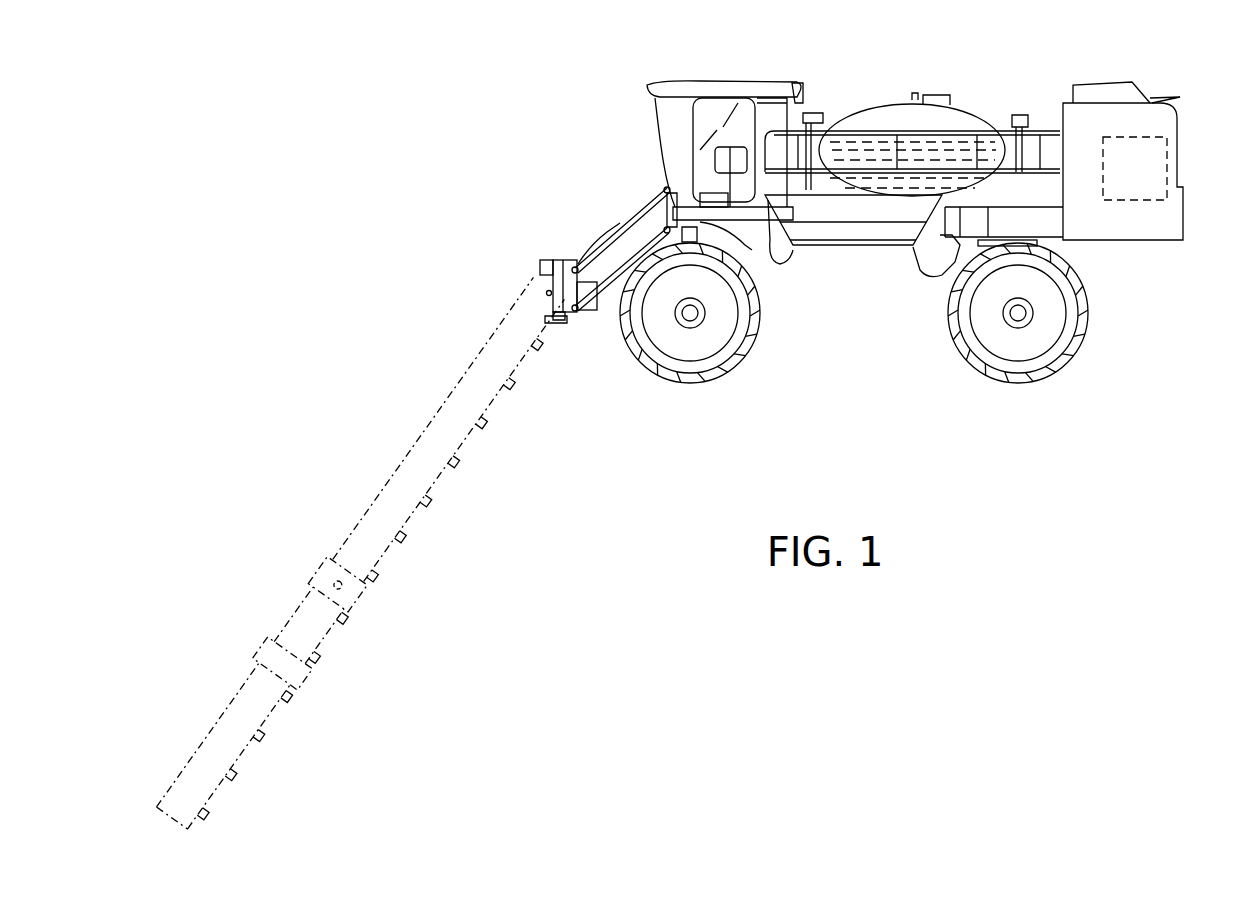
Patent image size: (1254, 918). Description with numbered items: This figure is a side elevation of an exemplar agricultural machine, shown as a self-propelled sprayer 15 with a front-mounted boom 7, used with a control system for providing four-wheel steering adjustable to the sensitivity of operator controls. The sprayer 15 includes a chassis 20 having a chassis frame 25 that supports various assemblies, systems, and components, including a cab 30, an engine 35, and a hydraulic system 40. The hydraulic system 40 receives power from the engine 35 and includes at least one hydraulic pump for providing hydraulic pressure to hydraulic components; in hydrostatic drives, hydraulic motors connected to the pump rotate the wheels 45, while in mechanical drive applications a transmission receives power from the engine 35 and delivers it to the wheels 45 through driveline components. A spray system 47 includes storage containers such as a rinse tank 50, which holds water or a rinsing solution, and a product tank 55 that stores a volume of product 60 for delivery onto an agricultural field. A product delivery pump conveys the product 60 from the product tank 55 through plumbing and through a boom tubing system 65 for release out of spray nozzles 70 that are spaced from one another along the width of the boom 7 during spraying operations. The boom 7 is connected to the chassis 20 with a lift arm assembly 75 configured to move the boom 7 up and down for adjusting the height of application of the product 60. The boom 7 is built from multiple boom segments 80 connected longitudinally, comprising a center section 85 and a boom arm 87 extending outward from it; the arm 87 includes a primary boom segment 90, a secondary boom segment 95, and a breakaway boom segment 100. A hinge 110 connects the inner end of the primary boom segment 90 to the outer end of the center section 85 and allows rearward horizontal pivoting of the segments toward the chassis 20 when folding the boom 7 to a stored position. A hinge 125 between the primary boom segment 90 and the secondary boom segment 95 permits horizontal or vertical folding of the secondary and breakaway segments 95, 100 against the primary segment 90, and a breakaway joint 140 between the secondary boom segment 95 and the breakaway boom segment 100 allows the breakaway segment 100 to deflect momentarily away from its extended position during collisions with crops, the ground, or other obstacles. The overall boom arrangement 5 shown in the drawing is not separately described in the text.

The boom assembly 5 is at (290, 395).
The boom 7 is at (425, 470).
The self-propelled sprayer 15 is at (918, 53).
The chassis 20 is at (872, 252).
The chassis frame 25 is at (948, 268).
The cab 30 is at (727, 76).
The engine 35 is at (1143, 155).
The hydraulic system 40 is at (1085, 183).
The wheels 45 is at (735, 373).
The spray system 47 is at (985, 93).
The rinse tank 50 is at (1024, 118).
The product tank 55 is at (890, 97).
The product 60 is at (852, 152).
The boom tubing system 65 is at (492, 434).
The spray nozzles 70 is at (432, 505).
The lift arm assembly 75 is at (640, 216).
The boom segments 80 is at (378, 392).
The center section 85 is at (556, 245).
The left boom arm 87 is at (525, 562).
The primary boom segment 90 is at (430, 392).
The secondary boom segment 95 is at (298, 582).
The breakaway boom segment 100 is at (220, 708).
The hinge 110 is at (545, 294).
The hinge 125 is at (367, 611).
The breakaway joint 140 is at (312, 689).